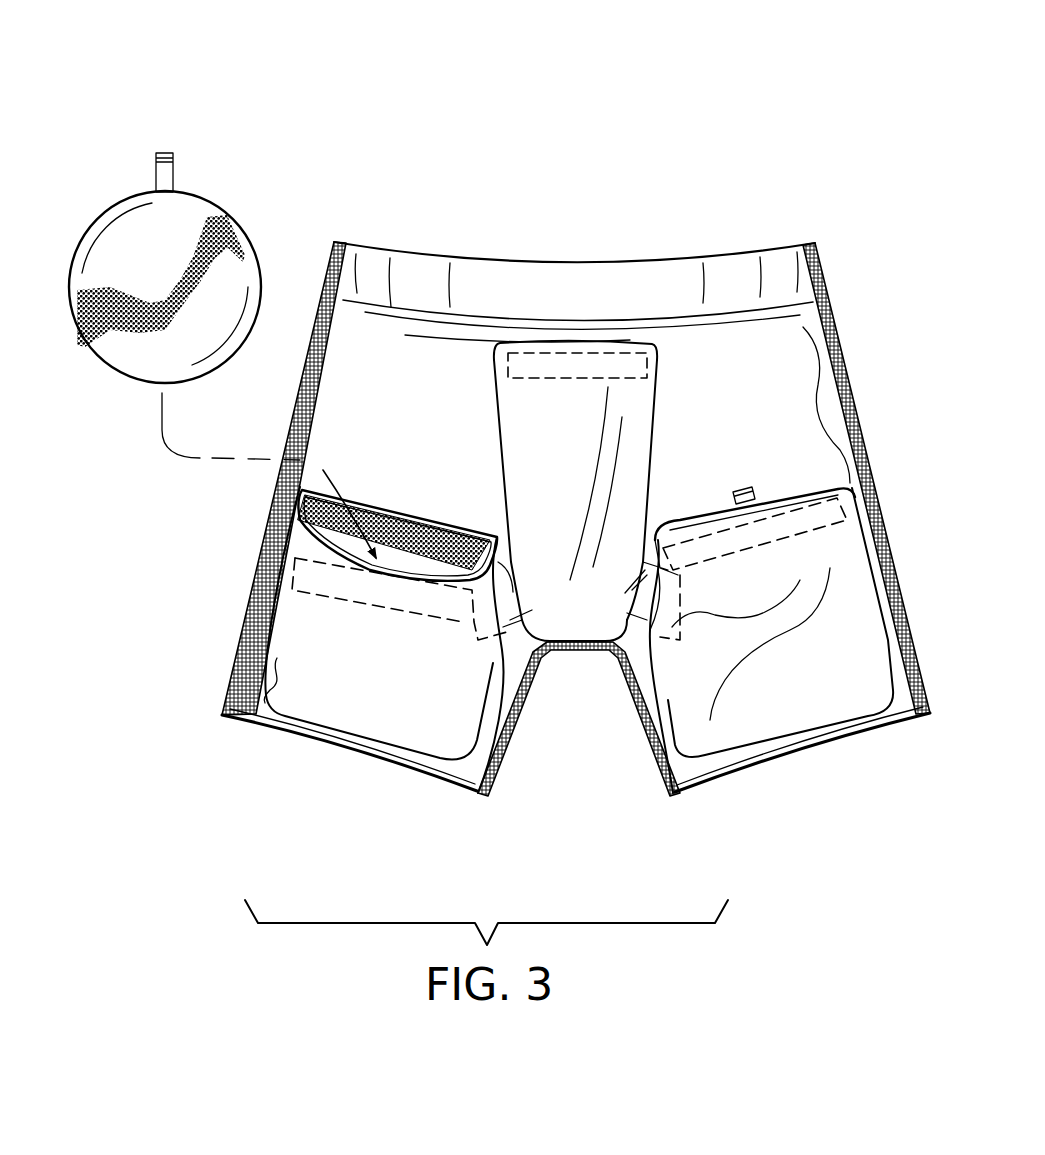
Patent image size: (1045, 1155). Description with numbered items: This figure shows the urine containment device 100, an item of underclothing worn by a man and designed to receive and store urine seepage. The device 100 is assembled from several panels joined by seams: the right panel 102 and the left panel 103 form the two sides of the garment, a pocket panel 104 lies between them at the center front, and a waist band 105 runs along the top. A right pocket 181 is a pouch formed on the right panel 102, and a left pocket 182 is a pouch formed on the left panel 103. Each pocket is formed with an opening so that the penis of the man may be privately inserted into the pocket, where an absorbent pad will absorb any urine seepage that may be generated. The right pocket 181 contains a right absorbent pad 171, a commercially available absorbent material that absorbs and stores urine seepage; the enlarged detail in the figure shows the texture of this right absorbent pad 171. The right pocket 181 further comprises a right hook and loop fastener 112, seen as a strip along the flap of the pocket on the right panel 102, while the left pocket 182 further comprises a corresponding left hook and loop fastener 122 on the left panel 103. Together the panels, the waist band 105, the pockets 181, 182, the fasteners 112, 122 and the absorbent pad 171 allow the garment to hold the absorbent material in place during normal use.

The urine containment device 100 is at (136, 82).
The right panel 102 is at (335, 405).
The left panel 103 is at (793, 360).
The pocket panel 104 is at (560, 403).
The waist band 105 is at (677, 287).
The right hook and loop fastener 112 is at (390, 532).
The left hook and loop fastener 122 is at (780, 530).
The right absorbent pad 171 is at (227, 237).
The right pocket 181 is at (353, 710).
The left pocket 182 is at (787, 703).